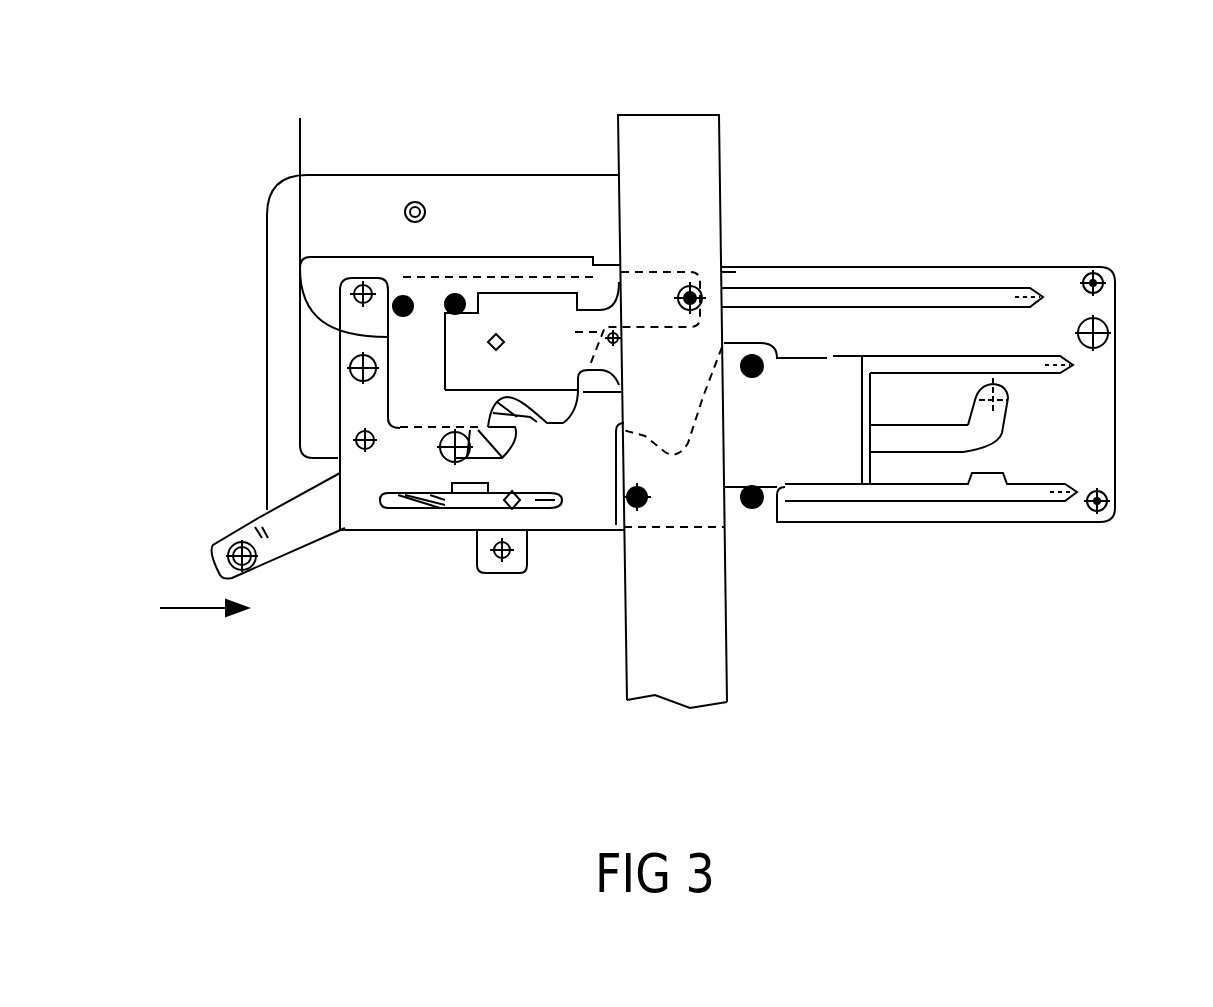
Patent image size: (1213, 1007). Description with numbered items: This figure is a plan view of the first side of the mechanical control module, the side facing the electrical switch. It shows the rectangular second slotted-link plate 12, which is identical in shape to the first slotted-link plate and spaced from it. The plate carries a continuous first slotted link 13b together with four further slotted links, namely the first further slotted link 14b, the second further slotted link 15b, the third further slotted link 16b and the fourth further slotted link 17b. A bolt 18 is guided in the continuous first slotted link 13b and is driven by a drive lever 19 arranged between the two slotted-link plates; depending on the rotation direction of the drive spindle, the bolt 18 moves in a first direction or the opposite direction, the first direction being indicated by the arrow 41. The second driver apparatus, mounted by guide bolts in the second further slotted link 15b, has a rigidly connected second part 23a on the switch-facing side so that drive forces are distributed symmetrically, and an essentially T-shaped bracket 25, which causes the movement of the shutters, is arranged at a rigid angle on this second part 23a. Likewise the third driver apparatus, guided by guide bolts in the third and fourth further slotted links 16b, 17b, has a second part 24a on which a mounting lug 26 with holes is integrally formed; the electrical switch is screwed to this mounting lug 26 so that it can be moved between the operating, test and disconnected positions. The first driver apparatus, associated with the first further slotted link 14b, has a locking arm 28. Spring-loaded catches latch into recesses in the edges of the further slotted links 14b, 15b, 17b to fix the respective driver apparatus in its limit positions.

The second slotted-link plate 12 is at (1058, 264).
The continuous first slotted link 13b is at (1003, 430).
The first further slotted link 14b is at (540, 480).
The second further slotted link 15b is at (935, 288).
The third further slotted link 16b is at (1060, 377).
The fourth further slotted link 17b is at (1027, 500).
The bolt 18 is at (433, 443).
The drive lever 19 is at (255, 516).
The second part of the second driver apparatus 23a is at (325, 262).
The second part of the third driver apparatus 24a is at (778, 355).
The T-shaped bracket 25 is at (721, 170).
The mounting lug 26 is at (870, 467).
The locking arm 28 is at (420, 175).
The arrow 41 is at (195, 610).